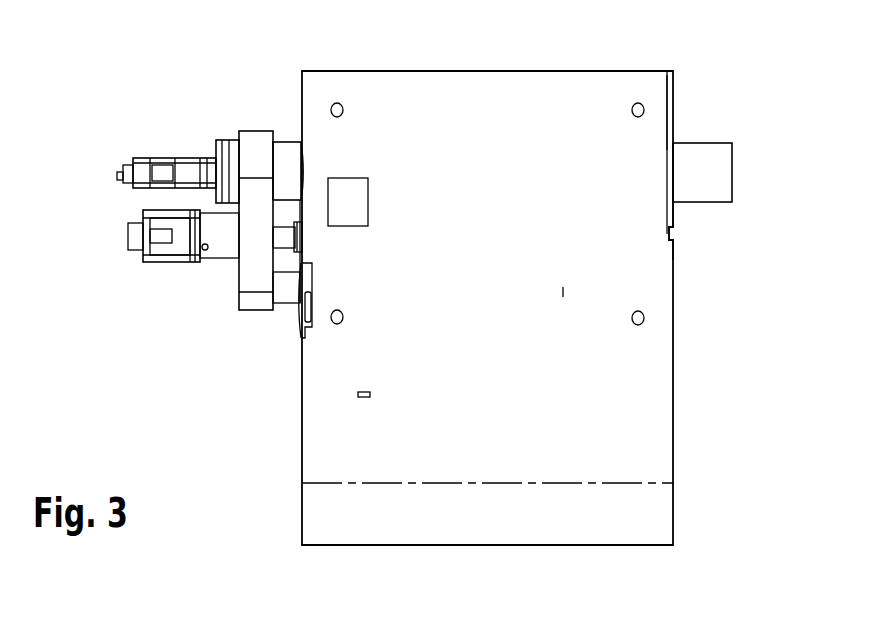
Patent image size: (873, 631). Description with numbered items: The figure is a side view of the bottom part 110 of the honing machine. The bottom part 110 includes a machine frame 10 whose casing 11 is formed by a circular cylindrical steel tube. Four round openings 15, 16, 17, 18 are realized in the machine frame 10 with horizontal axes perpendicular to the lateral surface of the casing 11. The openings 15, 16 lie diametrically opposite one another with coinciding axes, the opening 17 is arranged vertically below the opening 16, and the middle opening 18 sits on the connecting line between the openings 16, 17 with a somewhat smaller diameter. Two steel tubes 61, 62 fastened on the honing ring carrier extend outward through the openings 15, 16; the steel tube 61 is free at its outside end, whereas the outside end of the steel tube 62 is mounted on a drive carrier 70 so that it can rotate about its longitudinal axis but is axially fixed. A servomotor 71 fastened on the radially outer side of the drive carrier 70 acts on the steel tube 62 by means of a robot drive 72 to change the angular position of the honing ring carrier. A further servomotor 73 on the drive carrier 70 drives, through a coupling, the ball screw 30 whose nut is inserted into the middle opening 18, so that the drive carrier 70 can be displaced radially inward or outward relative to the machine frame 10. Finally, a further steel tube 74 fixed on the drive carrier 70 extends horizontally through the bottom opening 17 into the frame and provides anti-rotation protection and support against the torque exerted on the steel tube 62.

The machine frame 10 is at (685, 522).
The casing 11 is at (658, 350).
The bottom part 110 is at (723, 89).
The opening 15 is at (676, 205).
The opening 16 is at (300, 135).
The opening 17 is at (300, 325).
The opening 18 is at (298, 220).
The ball screw 30 is at (282, 233).
The steel tube 61 is at (720, 177).
The steel tube 62 is at (288, 163).
The drive carrier 70 is at (257, 138).
The servomotor 71 is at (120, 178).
The robot drive 72 is at (216, 145).
The further servomotor 73 is at (172, 243).
The further steel tube 74 is at (283, 288).